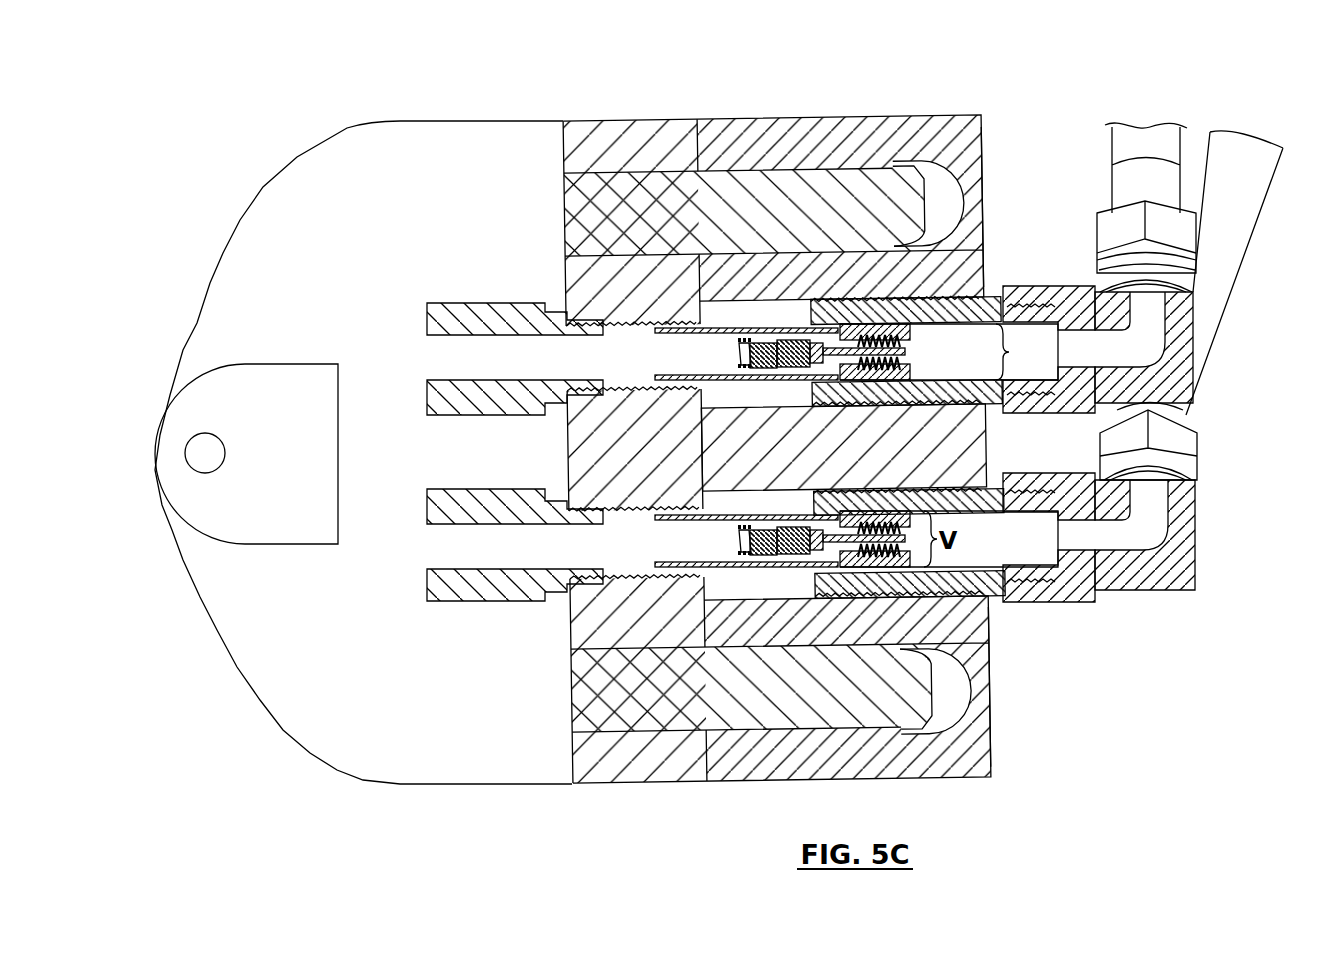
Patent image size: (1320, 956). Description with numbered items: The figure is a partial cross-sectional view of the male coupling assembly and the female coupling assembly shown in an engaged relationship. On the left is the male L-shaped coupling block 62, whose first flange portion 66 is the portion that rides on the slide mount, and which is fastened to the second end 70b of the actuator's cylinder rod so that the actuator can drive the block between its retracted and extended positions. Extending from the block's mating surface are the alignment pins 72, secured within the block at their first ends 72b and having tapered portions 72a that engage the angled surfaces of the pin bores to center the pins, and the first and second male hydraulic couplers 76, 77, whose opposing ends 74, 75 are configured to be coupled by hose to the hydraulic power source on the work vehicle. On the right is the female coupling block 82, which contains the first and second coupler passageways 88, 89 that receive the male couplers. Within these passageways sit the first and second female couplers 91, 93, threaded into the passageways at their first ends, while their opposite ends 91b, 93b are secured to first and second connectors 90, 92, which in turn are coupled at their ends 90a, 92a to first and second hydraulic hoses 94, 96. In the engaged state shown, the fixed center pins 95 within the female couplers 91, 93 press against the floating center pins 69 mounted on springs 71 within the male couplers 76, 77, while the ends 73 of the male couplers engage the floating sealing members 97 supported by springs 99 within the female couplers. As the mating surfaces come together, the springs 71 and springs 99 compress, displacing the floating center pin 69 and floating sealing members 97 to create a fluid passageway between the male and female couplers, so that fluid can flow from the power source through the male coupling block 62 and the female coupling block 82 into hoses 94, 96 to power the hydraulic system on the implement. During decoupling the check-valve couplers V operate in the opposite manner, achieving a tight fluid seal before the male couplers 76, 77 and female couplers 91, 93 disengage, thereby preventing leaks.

The male L-shaped coupling block 62 is at (785, 425).
The first flange portion 66 is at (321, 175).
The floating center pin 69 is at (797, 322).
The second end 70b is at (227, 383).
The springs 71 is at (737, 348).
The alignment pins 72 is at (865, 180).
The tapered portions 72a is at (915, 167).
The first ends 72b is at (566, 213).
The ends 73 is at (843, 328).
The opposing end 74 is at (480, 588).
The opposing end 75 is at (458, 313).
The first male hydraulic coupler 76 is at (720, 318).
The second male hydraulic coupler 77 is at (740, 508).
The coupling block 82 is at (987, 150).
The first coupler passageway 88 is at (733, 318).
The second coupler passageway 89 is at (757, 583).
The first connector 90 is at (1195, 393).
The end 90a is at (1147, 293).
The first female coupler 91 is at (993, 287).
The opposite end 91b is at (1038, 307).
The second connector 92 is at (1180, 590).
The end 92a is at (1157, 488).
The second female coupler 93 is at (995, 472).
The opposite end 93b is at (1033, 482).
The first hydraulic hose 94 is at (1115, 148).
The fixed center pins 95 is at (920, 355).
The second hydraulic hose 96 is at (1214, 305).
The floating sealing members 97 is at (910, 325).
The springs 99 is at (912, 363).
The check-valve couplers V is at (1010, 352).